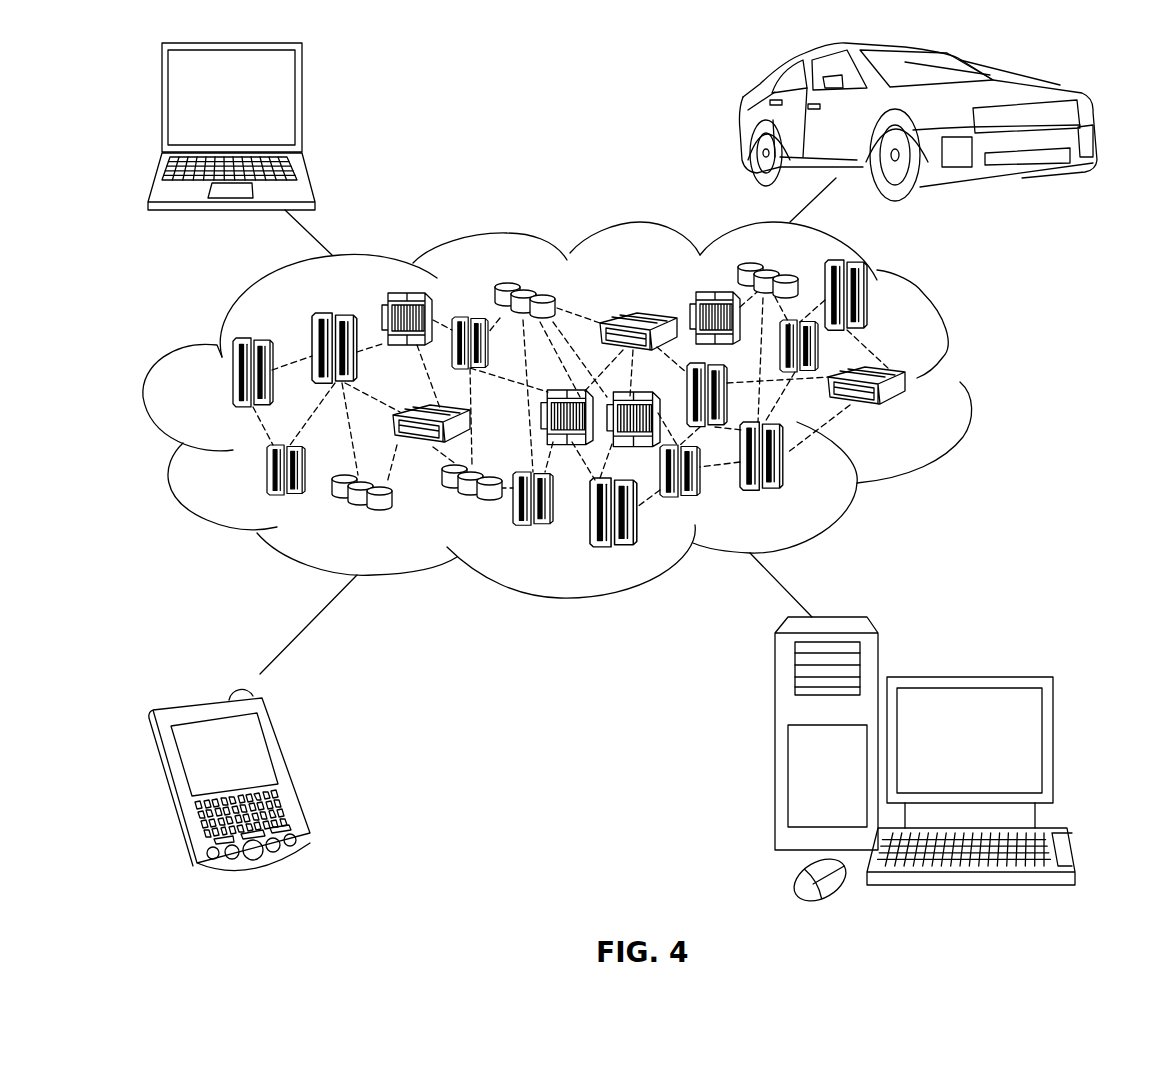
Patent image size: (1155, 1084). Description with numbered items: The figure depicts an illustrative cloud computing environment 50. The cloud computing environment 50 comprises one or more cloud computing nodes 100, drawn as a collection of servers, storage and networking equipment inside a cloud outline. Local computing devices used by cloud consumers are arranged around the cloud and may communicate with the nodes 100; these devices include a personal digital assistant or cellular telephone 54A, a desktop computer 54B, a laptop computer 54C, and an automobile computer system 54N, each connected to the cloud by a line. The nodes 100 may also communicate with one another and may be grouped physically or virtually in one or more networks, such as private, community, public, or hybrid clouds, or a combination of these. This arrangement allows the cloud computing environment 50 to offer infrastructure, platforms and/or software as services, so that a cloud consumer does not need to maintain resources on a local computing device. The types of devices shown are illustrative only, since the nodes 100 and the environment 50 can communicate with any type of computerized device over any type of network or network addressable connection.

The cloud computing environment 50 is at (962, 383).
The cloud computing nodes 100 is at (907, 412).
The personal digital assistant (PDA) or cellular telephone 54A is at (292, 770).
The desktop computer 54B is at (967, 673).
The laptop computer 54C is at (302, 103).
The automobile computer system 54N is at (743, 122).